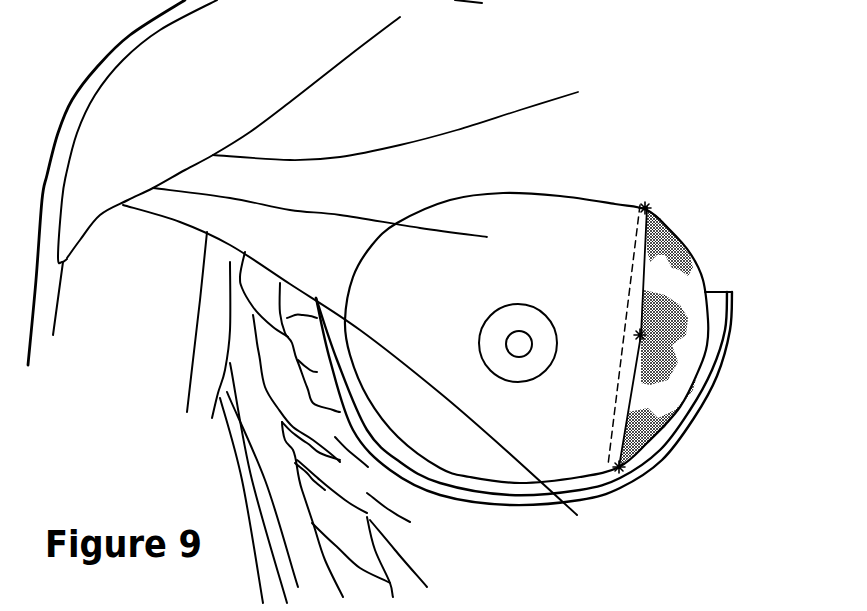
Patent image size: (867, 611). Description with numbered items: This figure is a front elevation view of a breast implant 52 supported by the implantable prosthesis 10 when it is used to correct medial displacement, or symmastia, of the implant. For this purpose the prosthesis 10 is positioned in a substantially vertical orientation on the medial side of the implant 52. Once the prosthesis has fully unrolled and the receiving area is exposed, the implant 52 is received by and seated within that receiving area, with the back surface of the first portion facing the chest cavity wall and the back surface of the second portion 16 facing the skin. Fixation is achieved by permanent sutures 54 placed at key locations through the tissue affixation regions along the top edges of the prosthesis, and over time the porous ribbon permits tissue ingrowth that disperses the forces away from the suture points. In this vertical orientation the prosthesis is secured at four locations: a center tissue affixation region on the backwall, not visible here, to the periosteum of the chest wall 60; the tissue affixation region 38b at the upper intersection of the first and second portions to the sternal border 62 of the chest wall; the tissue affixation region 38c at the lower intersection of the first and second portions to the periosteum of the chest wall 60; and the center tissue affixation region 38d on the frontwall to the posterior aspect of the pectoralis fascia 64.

The implantable prosthesis 10 is at (708, 283).
The second portion 16 is at (687, 246).
The tissue affixation region 38b is at (644, 206).
The tissue affixation region 38c is at (618, 470).
The center tissue affixation region 38d is at (640, 335).
The implant 52 is at (504, 193).
The permanent sutures 54 is at (646, 206).
The chest wall 60 is at (637, 470).
The sternal border 62 is at (662, 197).
The pectoralis fascia 64 is at (557, 452).